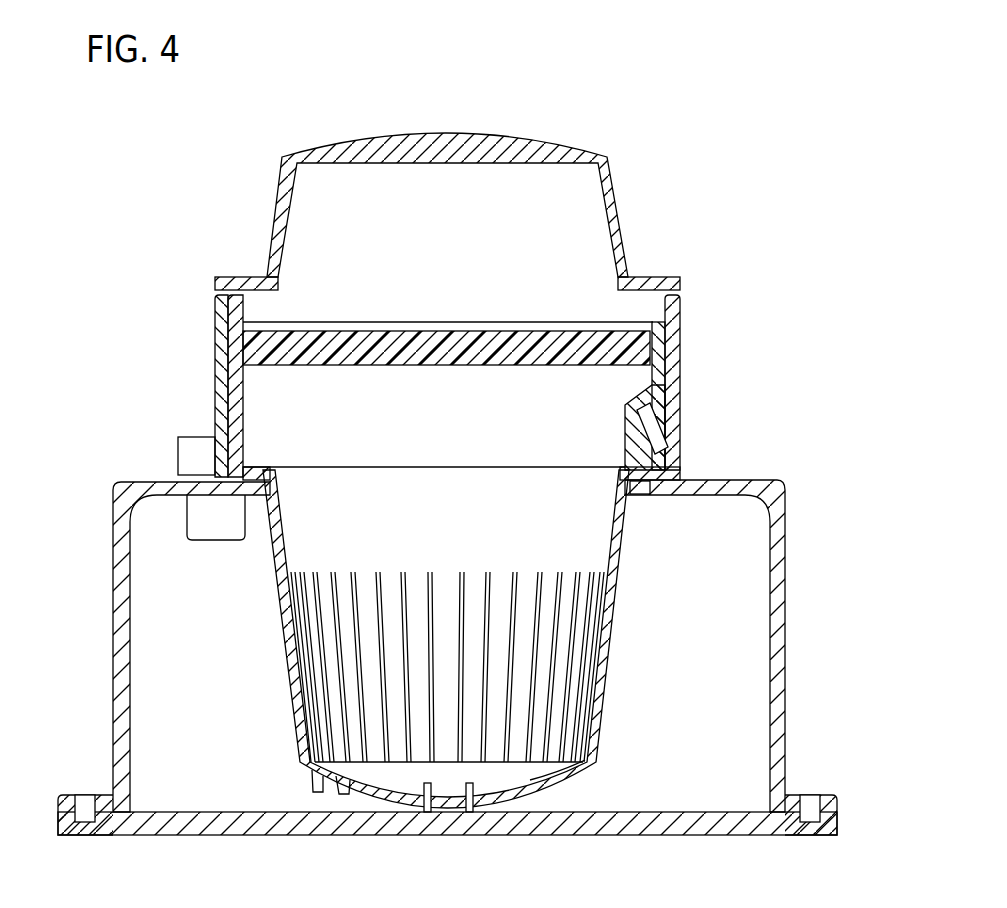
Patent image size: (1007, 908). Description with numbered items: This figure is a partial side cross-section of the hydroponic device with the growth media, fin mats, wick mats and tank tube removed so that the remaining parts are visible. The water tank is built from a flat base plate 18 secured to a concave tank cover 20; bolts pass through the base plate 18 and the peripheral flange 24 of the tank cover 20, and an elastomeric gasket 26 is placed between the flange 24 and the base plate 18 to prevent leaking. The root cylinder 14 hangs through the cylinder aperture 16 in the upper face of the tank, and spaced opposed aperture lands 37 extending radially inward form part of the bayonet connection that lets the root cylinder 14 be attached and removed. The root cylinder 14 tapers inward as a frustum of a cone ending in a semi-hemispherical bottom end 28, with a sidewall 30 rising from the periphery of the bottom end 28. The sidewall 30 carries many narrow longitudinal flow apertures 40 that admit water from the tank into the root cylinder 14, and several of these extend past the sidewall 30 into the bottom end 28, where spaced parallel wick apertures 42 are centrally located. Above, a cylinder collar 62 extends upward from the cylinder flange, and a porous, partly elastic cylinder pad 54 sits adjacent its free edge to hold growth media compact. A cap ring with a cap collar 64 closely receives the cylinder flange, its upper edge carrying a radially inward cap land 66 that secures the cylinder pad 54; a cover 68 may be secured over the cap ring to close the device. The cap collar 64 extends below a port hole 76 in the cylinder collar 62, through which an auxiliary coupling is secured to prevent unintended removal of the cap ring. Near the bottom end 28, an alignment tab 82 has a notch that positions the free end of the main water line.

The root cylinder 14 is at (613, 642).
The cylinder aperture 16 is at (640, 487).
The base plate 18 is at (673, 835).
The tank cover 20 is at (785, 575).
The flange 24 is at (70, 797).
The gasket 26 is at (112, 822).
The bottom end 28 is at (543, 790).
The sidewall 30 is at (113, 570).
The aperture lands 37 is at (257, 477).
The flow apertures 40 is at (378, 603).
The wick apertures 42 is at (427, 815).
The cylinder pad 54 is at (468, 345).
The cylinder collar 62 is at (245, 398).
The cap collar 64 is at (215, 335).
The cap land 66 is at (672, 312).
The cover 68 is at (612, 182).
The port hole 76 is at (635, 443).
The alignment tab 82 is at (312, 782).